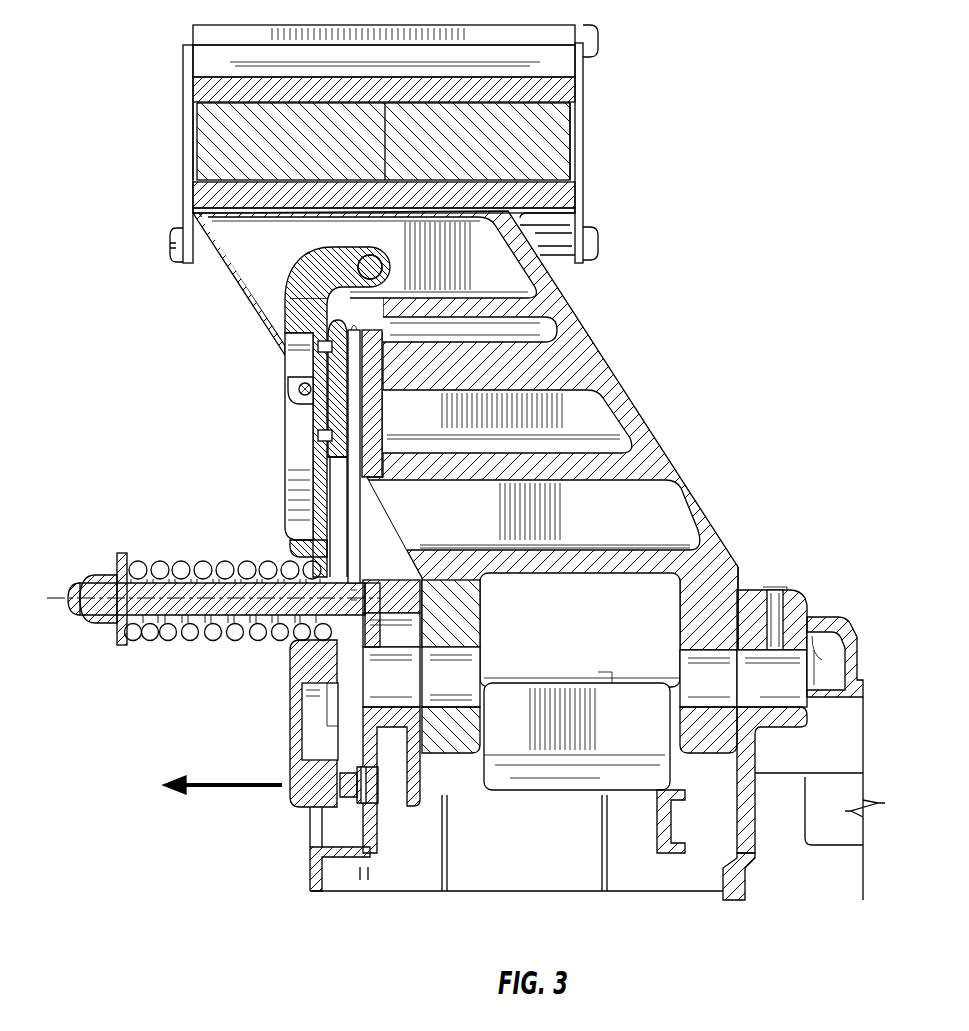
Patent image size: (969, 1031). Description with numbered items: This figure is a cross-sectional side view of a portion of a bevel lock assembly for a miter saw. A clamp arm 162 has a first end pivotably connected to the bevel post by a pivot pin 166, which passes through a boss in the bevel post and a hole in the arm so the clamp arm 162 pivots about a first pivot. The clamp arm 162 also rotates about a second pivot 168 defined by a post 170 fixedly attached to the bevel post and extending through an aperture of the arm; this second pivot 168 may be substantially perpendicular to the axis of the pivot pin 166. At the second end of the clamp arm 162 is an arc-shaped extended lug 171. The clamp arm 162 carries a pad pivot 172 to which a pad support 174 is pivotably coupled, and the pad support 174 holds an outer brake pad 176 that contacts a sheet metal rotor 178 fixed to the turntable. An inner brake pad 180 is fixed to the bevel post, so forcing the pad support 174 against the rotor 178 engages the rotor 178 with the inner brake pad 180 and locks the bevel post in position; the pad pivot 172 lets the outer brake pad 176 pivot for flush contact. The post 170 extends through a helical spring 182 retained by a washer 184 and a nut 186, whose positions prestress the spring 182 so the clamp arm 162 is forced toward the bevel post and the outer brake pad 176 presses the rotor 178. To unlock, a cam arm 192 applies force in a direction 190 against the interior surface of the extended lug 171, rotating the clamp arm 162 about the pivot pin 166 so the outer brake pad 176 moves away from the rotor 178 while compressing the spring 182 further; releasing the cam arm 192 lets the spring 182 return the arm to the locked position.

The clamp arm 162 is at (330, 265).
The pivot pin 166 is at (382, 262).
The second pivot 168 is at (227, 615).
The post 170 is at (73, 593).
The extended lug 171 is at (300, 800).
The pad pivot 172 is at (303, 392).
The pad support 174 is at (357, 382).
The outer brake pad 176 is at (340, 372).
The rotor 178 is at (362, 383).
The inner brake pad 180 is at (357, 312).
The spring 182 is at (222, 558).
The washer 184 is at (123, 647).
The nut 186 is at (90, 578).
The direction 190 is at (218, 780).
The cam arm 192 is at (486, 848).